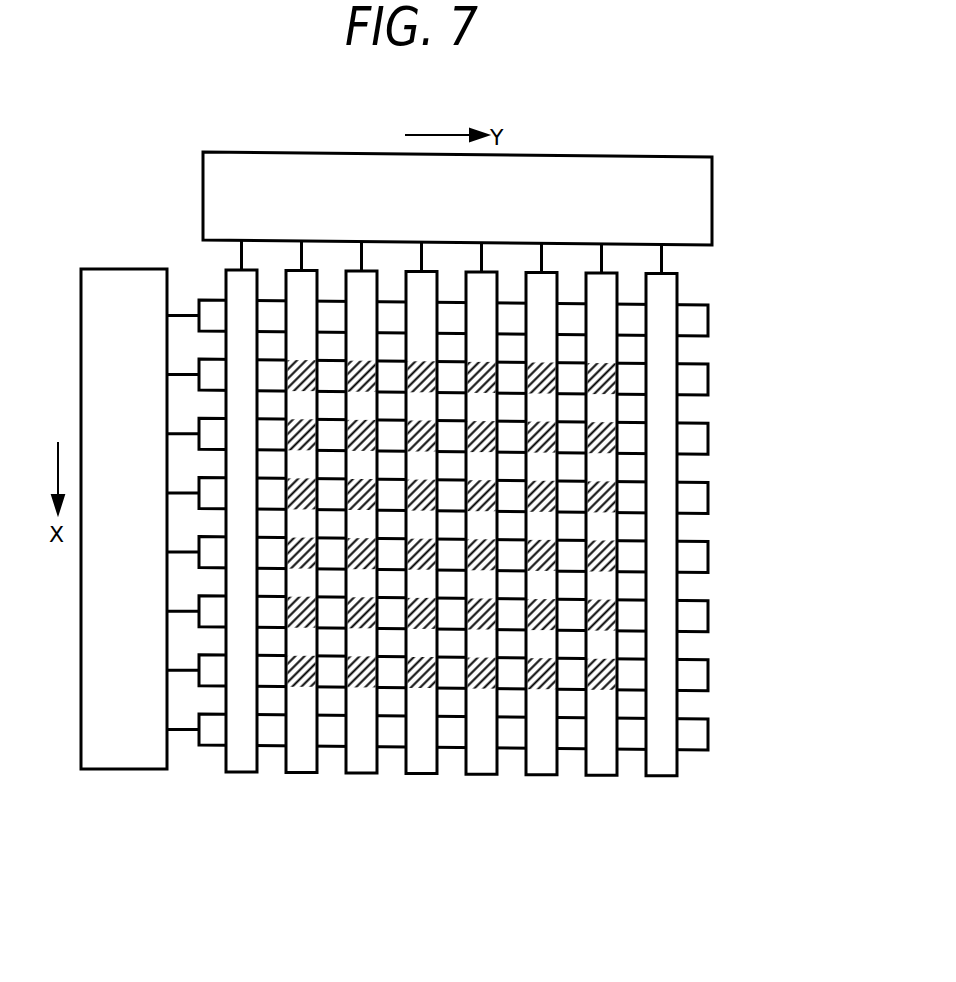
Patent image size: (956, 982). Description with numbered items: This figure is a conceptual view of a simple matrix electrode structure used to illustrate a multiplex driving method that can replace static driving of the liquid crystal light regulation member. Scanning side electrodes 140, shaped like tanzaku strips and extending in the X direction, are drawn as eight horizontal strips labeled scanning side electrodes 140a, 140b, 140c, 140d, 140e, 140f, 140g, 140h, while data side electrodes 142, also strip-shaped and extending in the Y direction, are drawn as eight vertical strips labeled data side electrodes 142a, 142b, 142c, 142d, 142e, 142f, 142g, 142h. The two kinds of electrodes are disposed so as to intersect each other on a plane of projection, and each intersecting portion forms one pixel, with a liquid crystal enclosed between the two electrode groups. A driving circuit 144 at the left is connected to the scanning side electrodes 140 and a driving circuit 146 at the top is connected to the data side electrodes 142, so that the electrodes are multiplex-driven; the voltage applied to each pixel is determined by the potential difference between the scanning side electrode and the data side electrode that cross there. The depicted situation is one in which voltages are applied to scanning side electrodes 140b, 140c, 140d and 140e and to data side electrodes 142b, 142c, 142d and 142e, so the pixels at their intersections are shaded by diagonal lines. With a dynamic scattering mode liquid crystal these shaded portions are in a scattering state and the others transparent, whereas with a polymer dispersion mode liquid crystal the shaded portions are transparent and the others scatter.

The scanning side electrodes 140 is at (520, 528).
The scanning side electrode 140a is at (708, 320).
The scanning side electrode 140b is at (708, 380).
The scanning side electrode 140c is at (708, 439).
The scanning side electrode 140d is at (708, 498).
The scanning side electrode 140e is at (708, 557).
The scanning side electrode 140f is at (708, 616).
The scanning side electrode 140g is at (708, 675).
The scanning side electrode 140h is at (487, 732).
The data side electrodes 142 is at (447, 595).
The data side electrode 142a is at (242, 773).
The data side electrode 142b is at (297, 773).
The data side electrode 142c is at (355, 774).
The data side electrode 142d is at (417, 774).
The data side electrode 142e is at (480, 775).
The data side electrode 142f is at (538, 775).
The data side electrode 142g is at (597, 775).
The data side electrode 142h is at (647, 570).
The driving circuit 144 is at (137, 269).
The driving circuit 146 is at (712, 190).